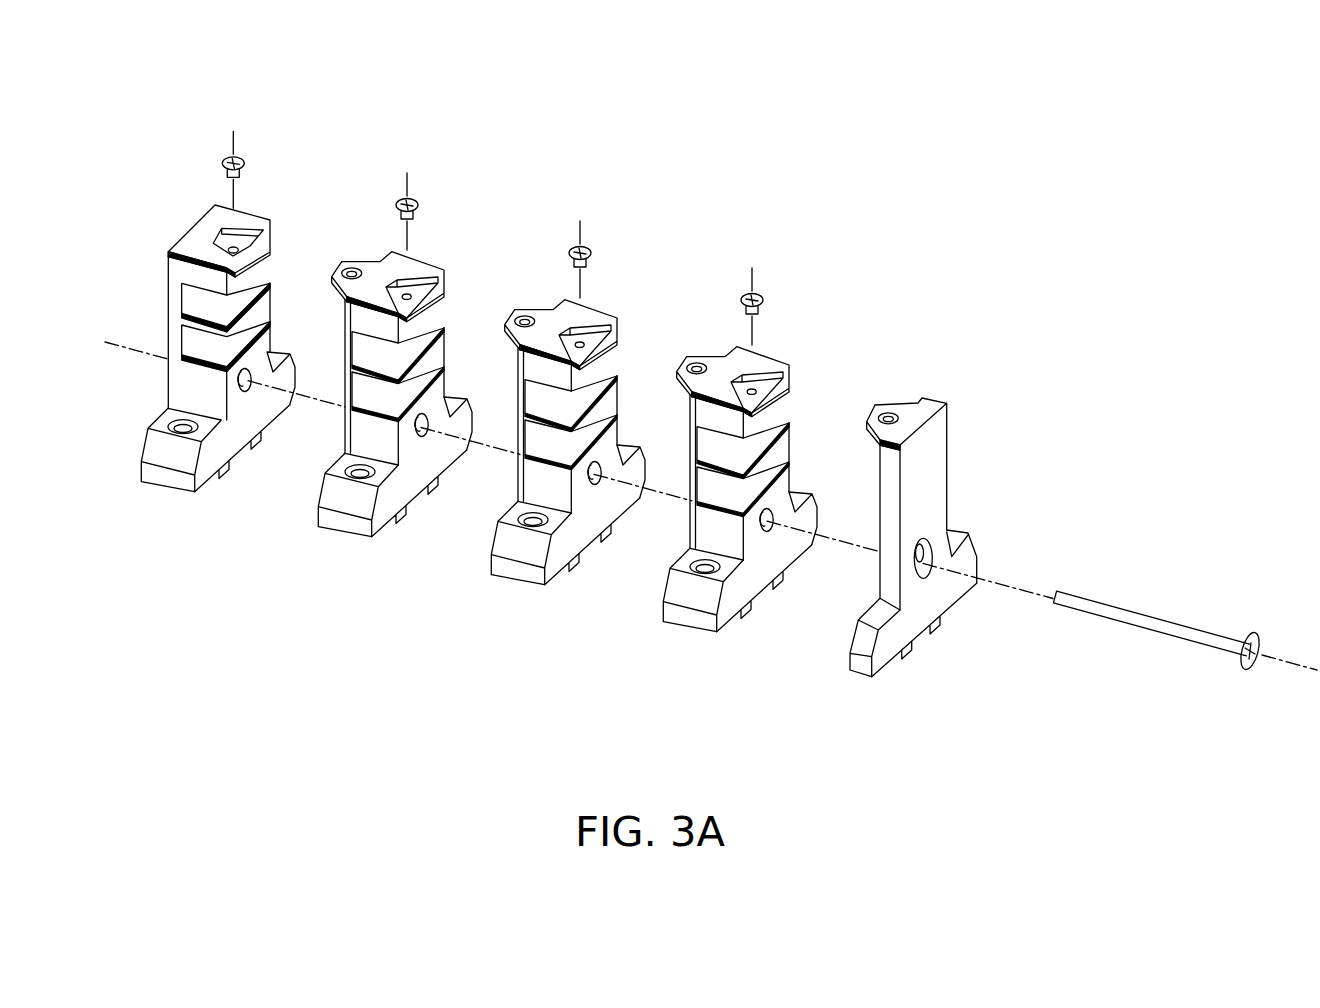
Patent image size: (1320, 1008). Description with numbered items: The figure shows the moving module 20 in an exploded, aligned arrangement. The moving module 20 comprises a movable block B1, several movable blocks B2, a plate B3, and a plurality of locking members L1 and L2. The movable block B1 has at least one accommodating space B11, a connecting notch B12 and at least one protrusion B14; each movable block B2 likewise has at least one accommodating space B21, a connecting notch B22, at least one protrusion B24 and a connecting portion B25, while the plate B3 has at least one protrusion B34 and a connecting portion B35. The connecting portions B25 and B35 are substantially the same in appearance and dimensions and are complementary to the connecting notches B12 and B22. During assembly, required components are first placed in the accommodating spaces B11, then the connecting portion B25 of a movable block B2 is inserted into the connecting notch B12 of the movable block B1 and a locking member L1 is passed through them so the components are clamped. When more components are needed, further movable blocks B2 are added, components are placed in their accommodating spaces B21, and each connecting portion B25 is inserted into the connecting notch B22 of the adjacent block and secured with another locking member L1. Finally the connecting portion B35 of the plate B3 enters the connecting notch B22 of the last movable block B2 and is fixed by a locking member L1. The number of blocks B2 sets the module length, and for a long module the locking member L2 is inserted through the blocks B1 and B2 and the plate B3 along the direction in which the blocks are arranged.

The moving module 20 is at (103, 120).
The movable block B1 is at (204, 345).
The accommodating space B11 is at (190, 340).
The connecting notch B12 is at (250, 248).
The protrusion B14 is at (257, 447).
The movable block B2 is at (551, 461).
The accommodating space B21 is at (363, 378).
The connecting notch B22 is at (420, 290).
The protrusion B24 is at (432, 492).
The connecting portion B25 is at (335, 280).
The plate B3 is at (909, 555).
The protrusion B34 is at (931, 632).
The connecting portion B35 is at (868, 430).
The locking member L1 is at (223, 160).
The locking member L2 is at (1152, 618).